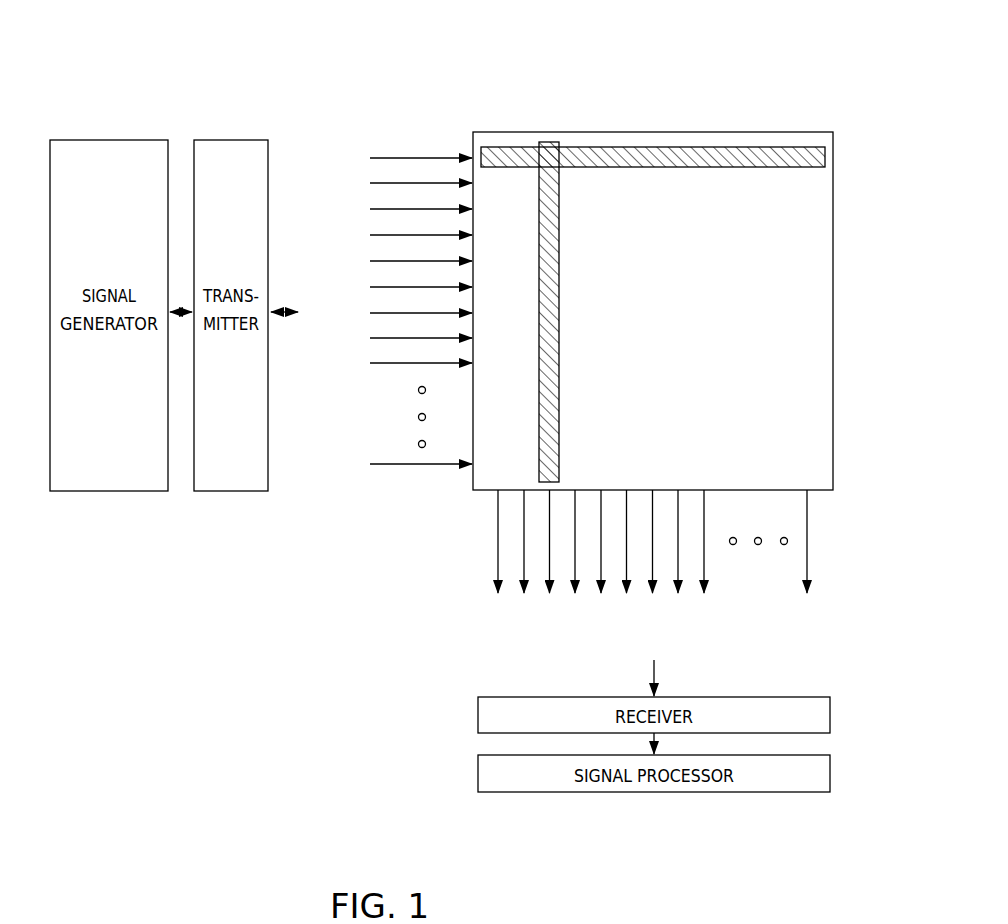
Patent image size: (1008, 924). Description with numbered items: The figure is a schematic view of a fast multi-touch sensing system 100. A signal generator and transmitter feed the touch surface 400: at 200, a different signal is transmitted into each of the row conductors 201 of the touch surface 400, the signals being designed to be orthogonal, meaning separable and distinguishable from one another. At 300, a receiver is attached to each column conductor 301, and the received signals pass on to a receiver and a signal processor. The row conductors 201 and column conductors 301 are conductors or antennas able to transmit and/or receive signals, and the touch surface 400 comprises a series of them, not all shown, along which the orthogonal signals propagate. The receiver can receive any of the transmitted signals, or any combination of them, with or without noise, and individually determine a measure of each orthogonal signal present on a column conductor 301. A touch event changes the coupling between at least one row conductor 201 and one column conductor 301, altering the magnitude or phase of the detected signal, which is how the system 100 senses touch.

The fast multi-touch sensing system 100 is at (653, 257).
The signal transmission 200 is at (379, 143).
The row conductor 201 is at (750, 157).
The signal reception 300 is at (483, 590).
The column conductor 301 is at (550, 405).
The touch surface 400 is at (650, 192).